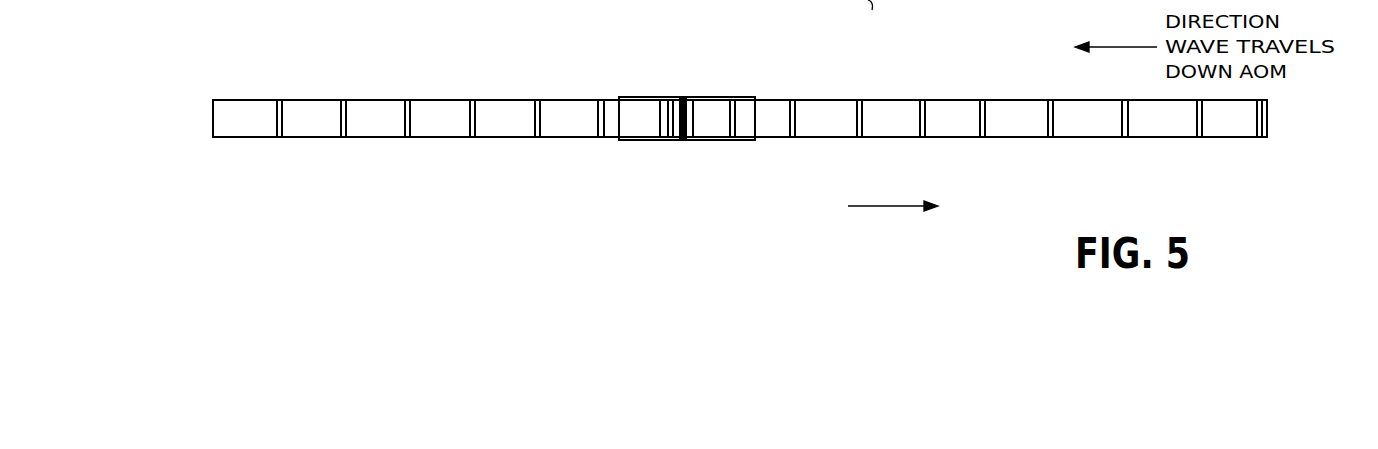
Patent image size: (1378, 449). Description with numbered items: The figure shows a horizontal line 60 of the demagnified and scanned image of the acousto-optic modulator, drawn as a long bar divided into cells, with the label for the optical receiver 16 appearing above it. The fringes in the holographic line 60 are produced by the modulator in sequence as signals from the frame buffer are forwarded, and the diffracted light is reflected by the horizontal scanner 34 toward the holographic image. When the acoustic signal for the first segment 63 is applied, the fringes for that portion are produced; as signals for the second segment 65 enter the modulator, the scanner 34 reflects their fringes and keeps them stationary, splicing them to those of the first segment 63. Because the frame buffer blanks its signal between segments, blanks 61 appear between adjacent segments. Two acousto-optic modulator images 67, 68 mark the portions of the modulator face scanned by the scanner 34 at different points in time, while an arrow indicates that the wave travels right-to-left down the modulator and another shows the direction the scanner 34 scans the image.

The optical receiver 16 is at (585, 5).
The horizontal scanner 34 is at (811, 234).
The line of the demagnified and scanned image of the acousto-optic modulator 60 is at (255, 153).
The blanks 61 is at (281, 100).
The first segment 63 is at (282, 85).
The second segment 65 is at (342, 140).
The acousto-optic modulator image 67 is at (693, 85).
The acousto-optic modulator image 68 is at (755, 150).